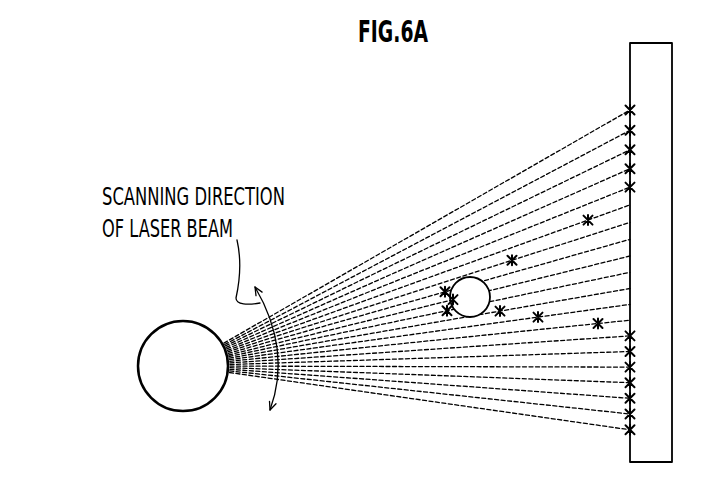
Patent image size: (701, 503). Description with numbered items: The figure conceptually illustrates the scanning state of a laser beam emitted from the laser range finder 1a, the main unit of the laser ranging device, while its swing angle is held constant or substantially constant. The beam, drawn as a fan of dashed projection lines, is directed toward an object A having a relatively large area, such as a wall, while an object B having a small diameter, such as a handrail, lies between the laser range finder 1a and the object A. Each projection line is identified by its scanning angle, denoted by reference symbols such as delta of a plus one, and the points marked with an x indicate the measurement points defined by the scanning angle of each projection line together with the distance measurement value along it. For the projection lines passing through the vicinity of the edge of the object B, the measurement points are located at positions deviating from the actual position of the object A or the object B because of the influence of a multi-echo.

The laser range finder 1a is at (198, 409).
The object A is at (630, 82).
The object B is at (471, 277).